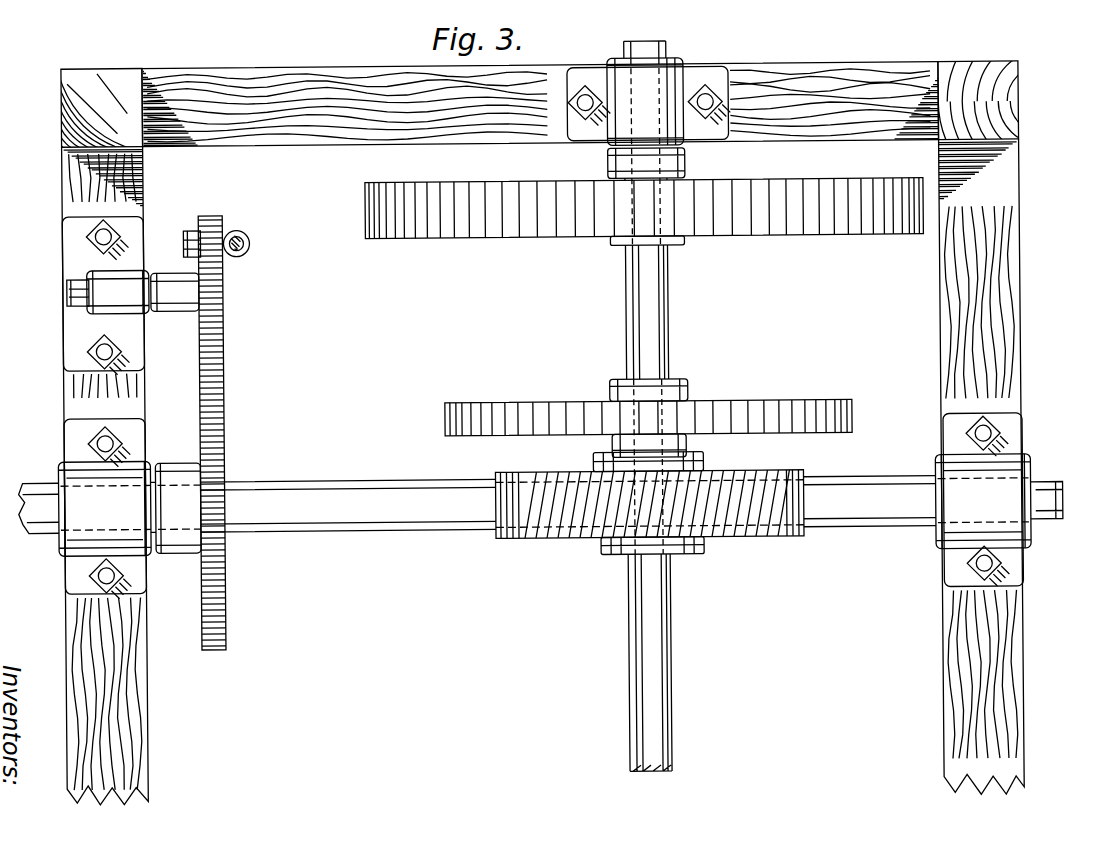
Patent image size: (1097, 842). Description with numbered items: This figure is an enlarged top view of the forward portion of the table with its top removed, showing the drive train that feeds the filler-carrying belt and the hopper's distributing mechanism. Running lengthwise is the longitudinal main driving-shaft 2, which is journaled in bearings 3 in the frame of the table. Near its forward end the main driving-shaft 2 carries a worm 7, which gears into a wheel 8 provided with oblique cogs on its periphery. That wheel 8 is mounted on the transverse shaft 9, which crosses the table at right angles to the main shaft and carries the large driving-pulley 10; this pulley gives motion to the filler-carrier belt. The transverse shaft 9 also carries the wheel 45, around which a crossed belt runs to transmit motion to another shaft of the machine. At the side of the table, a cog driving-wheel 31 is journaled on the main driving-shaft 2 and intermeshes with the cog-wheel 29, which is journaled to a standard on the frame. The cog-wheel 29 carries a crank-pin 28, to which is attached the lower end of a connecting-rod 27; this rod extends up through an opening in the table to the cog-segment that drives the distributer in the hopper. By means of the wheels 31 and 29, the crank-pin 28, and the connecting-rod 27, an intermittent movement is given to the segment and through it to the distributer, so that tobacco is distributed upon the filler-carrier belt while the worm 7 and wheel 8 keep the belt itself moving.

The longitudinal main driving-shaft 2 is at (540, 493).
The bearings 3 is at (994, 563).
The worm 7 is at (613, 556).
The wheel 8 is at (649, 495).
The transverse shaft 9 is at (639, 406).
The large driving-pulley 10 is at (759, 236).
The connecting-rod 27 is at (252, 243).
The crank-pin 28 is at (185, 242).
The cog-wheel 29 is at (224, 302).
The cog driving-wheel 31 is at (224, 466).
The wheel 45 is at (740, 407).